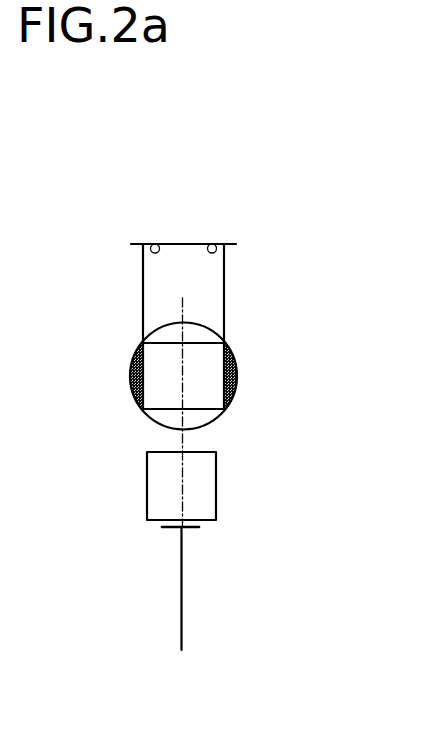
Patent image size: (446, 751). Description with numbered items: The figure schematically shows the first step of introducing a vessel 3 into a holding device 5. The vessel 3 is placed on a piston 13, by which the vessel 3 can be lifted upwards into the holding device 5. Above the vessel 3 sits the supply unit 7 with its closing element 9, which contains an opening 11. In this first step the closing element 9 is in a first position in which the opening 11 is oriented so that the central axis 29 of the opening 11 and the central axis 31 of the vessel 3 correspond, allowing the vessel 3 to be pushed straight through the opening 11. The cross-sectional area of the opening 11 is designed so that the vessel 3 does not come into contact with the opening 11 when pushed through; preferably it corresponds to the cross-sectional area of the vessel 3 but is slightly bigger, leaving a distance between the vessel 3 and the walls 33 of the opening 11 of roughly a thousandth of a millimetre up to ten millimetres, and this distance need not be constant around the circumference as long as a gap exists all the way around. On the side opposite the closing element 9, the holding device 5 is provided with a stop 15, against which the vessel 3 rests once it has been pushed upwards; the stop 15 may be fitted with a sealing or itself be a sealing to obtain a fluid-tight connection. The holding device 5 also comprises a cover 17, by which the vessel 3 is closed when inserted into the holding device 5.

The holding device 5 is at (112, 272).
The cover 17 is at (172, 243).
The stop 15 is at (213, 244).
The central axis of the opening 29 is at (183, 300).
The supply unit 7 is at (217, 420).
The closing element 9 is at (143, 397).
The walls of the opening 33 is at (141, 397).
The opening 11 is at (206, 382).
The vessel 3 is at (199, 474).
The central axis of the vessel 31 is at (181, 489).
The piston 13 is at (182, 600).